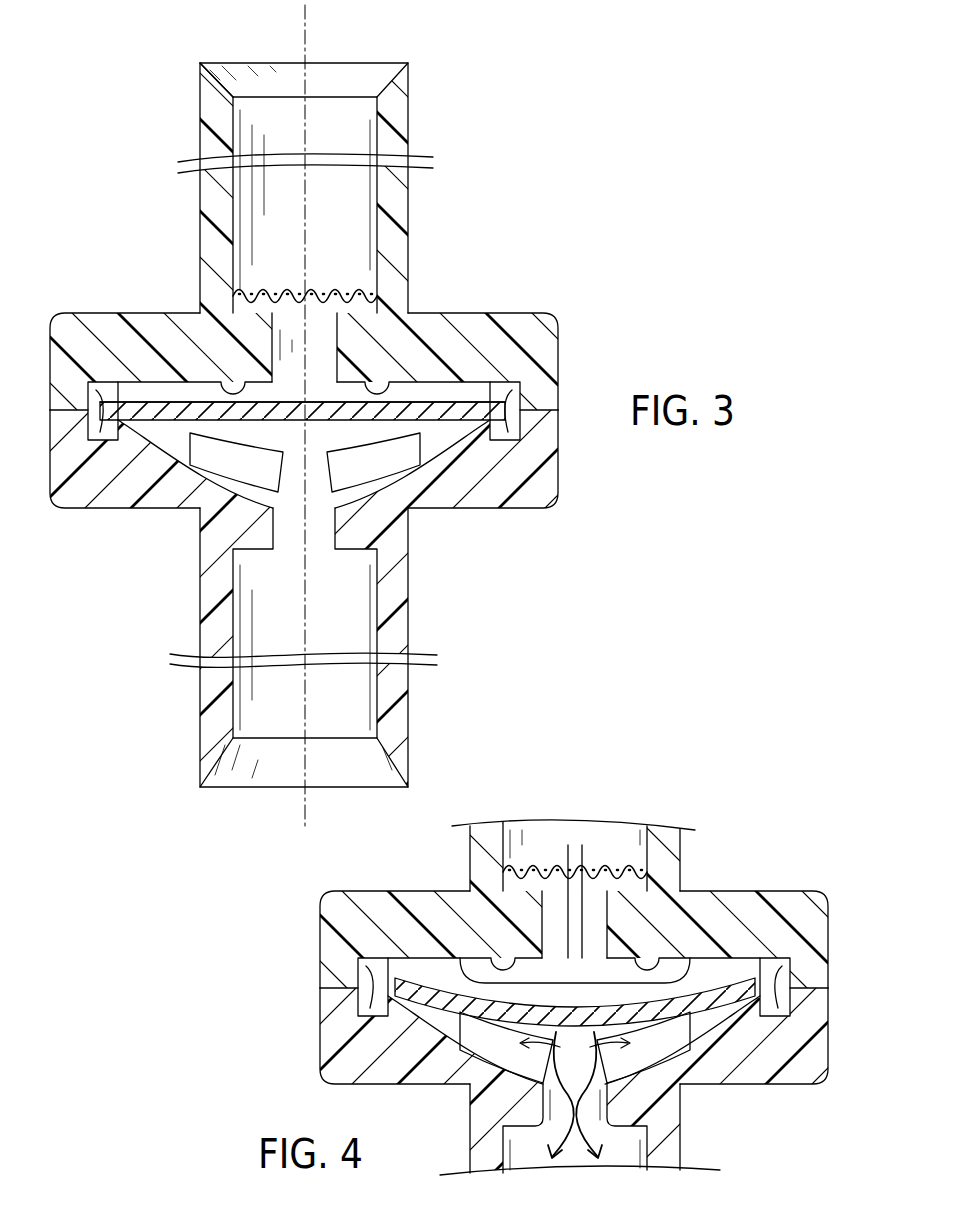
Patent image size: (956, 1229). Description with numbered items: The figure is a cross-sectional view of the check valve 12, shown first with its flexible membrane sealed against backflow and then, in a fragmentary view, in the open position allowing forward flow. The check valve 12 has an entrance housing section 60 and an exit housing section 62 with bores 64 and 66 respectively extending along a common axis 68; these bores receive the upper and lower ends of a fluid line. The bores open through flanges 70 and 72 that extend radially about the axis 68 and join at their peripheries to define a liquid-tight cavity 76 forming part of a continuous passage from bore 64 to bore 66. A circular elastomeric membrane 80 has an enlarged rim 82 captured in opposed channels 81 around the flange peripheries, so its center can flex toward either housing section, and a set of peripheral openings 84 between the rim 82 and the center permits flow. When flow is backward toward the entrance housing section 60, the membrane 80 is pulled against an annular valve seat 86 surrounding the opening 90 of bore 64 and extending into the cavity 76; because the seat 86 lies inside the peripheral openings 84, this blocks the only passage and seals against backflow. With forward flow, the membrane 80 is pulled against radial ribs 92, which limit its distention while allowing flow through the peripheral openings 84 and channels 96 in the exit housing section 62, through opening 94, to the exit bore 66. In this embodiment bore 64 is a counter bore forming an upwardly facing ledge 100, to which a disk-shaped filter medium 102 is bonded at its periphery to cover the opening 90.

In FIG. 3, the check valve 12 is at (458, 72).
In FIG. 3, the entrance housing section 60 is at (410, 120).
In FIG. 4, the entrance housing section 60 is at (680, 875).
In FIG. 3, the exit housing section 62 is at (200, 633).
In FIG. 4, the exit housing section 62 is at (682, 1150).
In FIG. 3, the bore 64 is at (368, 110).
In FIG. 4, the bore 64 is at (640, 852).
In FIG. 3, the bore 66 is at (235, 712).
In FIG. 4, the bore 66 is at (635, 1140).
In FIG. 3, the common axis 68 is at (300, 42).
In FIG. 3, the flange 70 is at (562, 313).
In FIG. 4, the flange 70 is at (830, 884).
In FIG. 3, the flange 72 is at (560, 503).
In FIG. 4, the flange 72 is at (826, 1086).
In FIG. 3, the liquid-tight cavity 76 is at (440, 435).
In FIG. 3, the elastomeric membrane 80 is at (465, 395).
In FIG. 4, the elastomeric membrane 80 is at (760, 990).
In FIG. 3, the opposed channels 81 is at (95, 392).
In FIG. 4, the opposed channels 81 is at (365, 968).
In FIG. 3, the enlarged rim 82 is at (520, 395).
In FIG. 4, the enlarged rim 82 is at (790, 968).
In FIG. 3, the peripheral openings 84 is at (405, 402).
In FIG. 4, the peripheral openings 84 is at (462, 975).
In FIG. 3, the annular valve seat 86 is at (150, 318).
In FIG. 4, the annular valve seat 86 is at (475, 905).
In FIG. 3, the opening 90 is at (252, 372).
In FIG. 4, the opening 90 is at (590, 845).
In FIG. 3, the radial ribs 92 is at (225, 480).
In FIG. 4, the radial ribs 92 is at (470, 1085).
In FIG. 3, the opening 94 is at (330, 520).
In FIG. 4, the opening 94 is at (575, 1047).
In FIG. 4, the channels 96 is at (575, 1095).
In FIG. 3, the ledge 100 is at (372, 300).
In FIG. 3, the filter medium 102 is at (325, 288).
In FIG. 4, the filter medium 102 is at (540, 862).